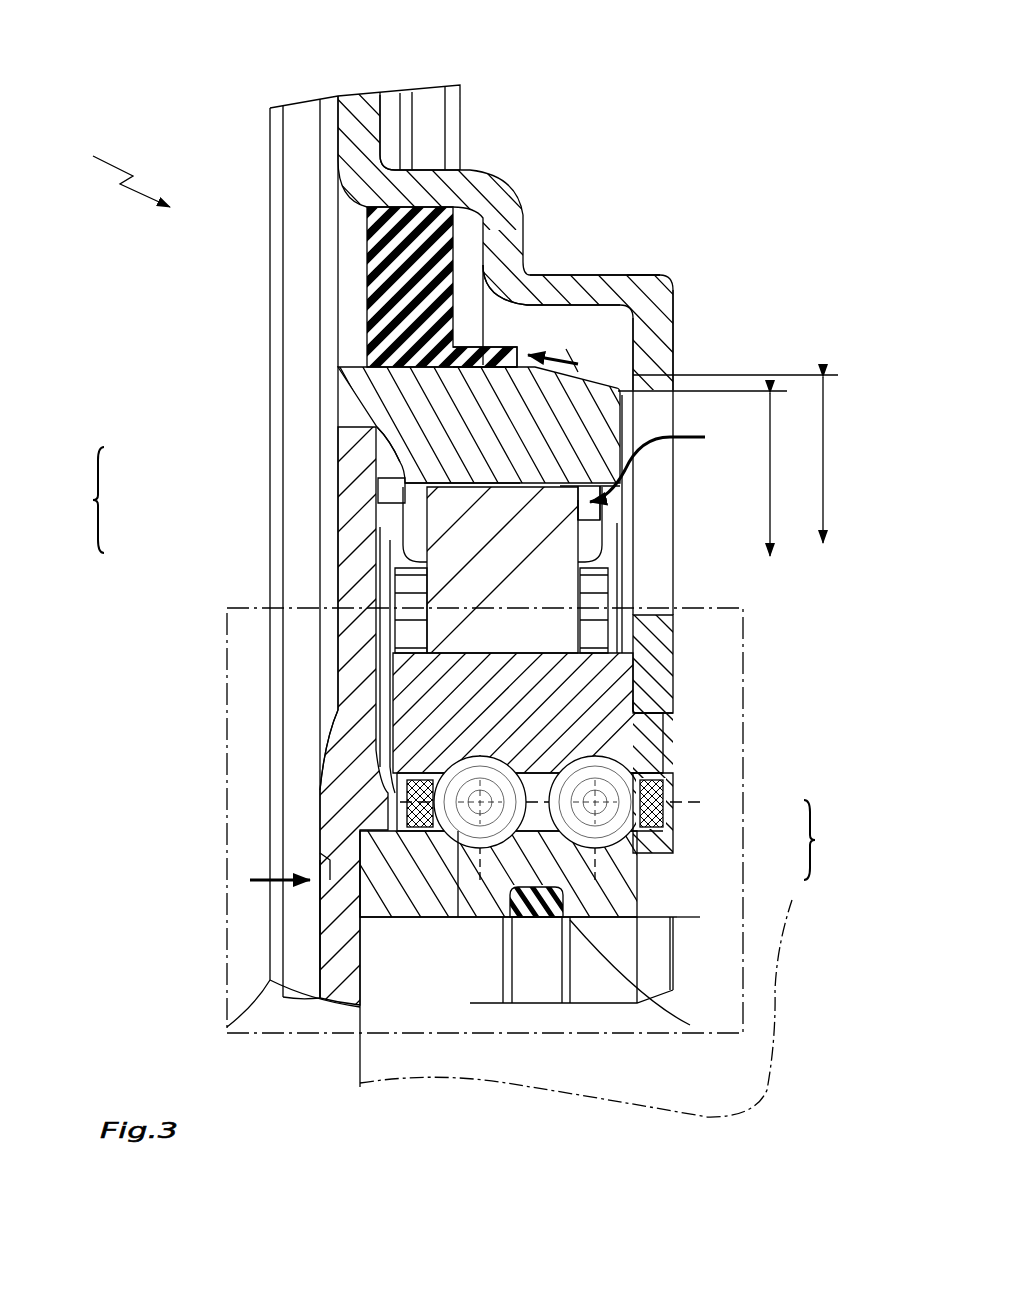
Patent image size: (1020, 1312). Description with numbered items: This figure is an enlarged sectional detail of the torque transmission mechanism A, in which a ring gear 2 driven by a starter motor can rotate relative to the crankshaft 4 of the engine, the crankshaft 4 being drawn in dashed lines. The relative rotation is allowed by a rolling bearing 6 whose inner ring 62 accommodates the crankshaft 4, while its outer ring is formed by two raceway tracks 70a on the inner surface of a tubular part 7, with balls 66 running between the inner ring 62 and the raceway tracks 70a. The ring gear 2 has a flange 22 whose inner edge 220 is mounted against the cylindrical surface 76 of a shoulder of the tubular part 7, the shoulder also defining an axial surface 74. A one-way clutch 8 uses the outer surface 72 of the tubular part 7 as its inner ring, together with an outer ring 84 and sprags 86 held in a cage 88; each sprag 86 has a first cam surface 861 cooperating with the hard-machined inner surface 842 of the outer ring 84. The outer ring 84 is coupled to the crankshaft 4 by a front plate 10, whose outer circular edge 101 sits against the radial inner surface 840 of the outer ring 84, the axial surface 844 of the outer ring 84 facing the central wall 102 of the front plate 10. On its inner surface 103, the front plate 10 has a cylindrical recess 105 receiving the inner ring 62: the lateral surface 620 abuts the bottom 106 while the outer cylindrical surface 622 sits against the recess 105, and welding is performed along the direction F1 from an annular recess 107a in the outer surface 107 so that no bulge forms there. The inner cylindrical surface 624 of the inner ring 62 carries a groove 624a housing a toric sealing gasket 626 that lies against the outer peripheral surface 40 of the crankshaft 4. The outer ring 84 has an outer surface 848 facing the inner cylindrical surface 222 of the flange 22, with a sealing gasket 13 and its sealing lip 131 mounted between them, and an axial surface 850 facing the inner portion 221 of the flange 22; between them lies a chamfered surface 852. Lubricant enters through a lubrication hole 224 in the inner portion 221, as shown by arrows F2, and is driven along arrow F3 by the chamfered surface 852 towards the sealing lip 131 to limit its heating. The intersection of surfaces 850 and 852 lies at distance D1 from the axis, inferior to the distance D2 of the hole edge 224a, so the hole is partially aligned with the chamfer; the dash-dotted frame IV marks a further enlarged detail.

The ring gear 2 is at (513, 165).
The inner cylindrical surface 222 is at (330, 275).
The flange 22 is at (570, 290).
The chamfered surface 852 is at (632, 276).
The inner portion 221 is at (662, 353).
The lubrication hole 224 is at (668, 551).
The edge 224a is at (657, 382).
The sealing gasket 13 is at (428, 205).
The sealing lip 131 is at (505, 362).
The outer surface 848 is at (345, 363).
The outer circular edge 101 is at (374, 434).
The axial surface 844 is at (503, 472).
The axial surface 850 is at (560, 450).
The radial inner surface 840 is at (624, 470).
The first cam surface 861 is at (600, 509).
The inner surface 842 is at (615, 522).
The one-way clutch 8 is at (470, 709).
The outer ring 84 is at (352, 415).
The sprags 86 is at (447, 503).
The cage 88 is at (397, 542).
The outer surface 72 is at (602, 578).
The rolling bearing 6 is at (548, 784).
The inner ring 62 is at (660, 890).
The balls 66 is at (625, 815).
The axial surface 74 is at (650, 672).
The cylindrical surface 76 is at (666, 707).
The inner edge 220 is at (660, 753).
The tubular part 7 is at (413, 680).
The inner surface 103 is at (403, 808).
The front plate 10 is at (400, 805).
The raceway tracks 70a is at (592, 767).
The outer cylindrical surface 622 is at (340, 750).
The lateral surface 620 is at (358, 900).
The toric sealing gasket 626 is at (530, 920).
The inner cylindrical surface 624 is at (468, 930).
The outer peripheral surface 40 is at (737, 915).
The groove 624a is at (690, 1025).
The crankshaft 4 is at (740, 1100).
The bottom 106 is at (368, 975).
The outer surface 107 is at (270, 985).
The cylindrical recess 105 is at (310, 932).
The central wall 102 is at (345, 990).
The annular recess 107a is at (322, 886).
The welding direction arrow F1 is at (271, 880).
The lubricant flow arrows F2 is at (659, 463).
The lubricant flow arrow F3 is at (553, 351).
The distance D1 is at (783, 474).
The distance D2 is at (742, 459).
The section IV is at (227, 762).
The torque transmission mechanism A is at (124, 172).